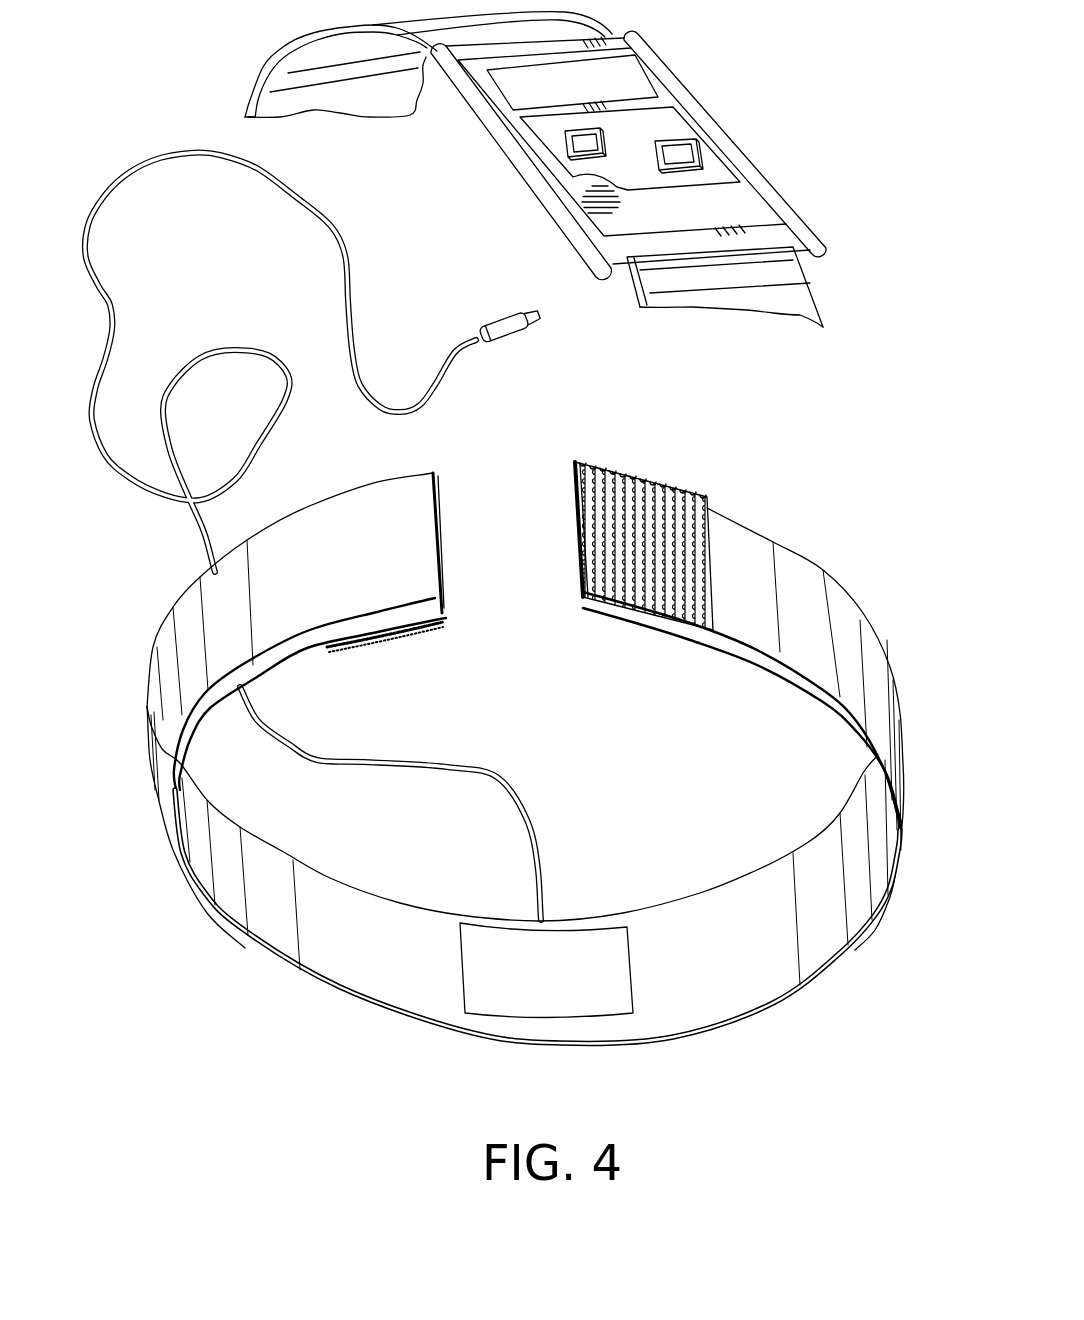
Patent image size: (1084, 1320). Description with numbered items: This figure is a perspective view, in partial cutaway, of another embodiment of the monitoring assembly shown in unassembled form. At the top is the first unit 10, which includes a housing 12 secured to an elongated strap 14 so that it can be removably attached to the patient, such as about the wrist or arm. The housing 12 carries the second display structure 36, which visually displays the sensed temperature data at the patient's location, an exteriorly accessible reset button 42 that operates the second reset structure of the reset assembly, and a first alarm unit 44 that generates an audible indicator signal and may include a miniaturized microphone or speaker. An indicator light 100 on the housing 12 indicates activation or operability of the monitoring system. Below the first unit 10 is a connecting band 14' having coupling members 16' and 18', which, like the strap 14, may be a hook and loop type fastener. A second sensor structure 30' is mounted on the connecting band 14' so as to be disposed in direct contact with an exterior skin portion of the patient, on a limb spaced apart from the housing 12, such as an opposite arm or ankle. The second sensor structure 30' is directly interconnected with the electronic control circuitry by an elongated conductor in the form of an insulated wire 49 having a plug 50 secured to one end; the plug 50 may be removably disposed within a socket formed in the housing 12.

The first unit 10 is at (775, 117).
The housing 12 is at (473, 117).
The elongated strap 14 is at (566, 173).
The second display structure 36 is at (627, 77).
The reset button 42 is at (568, 138).
The first alarm unit 44 is at (597, 207).
The indicator light 100 is at (698, 152).
The insulated wire 49 is at (107, 198).
The plug 50 is at (507, 323).
The connecting band 14' is at (533, 758).
The connector member 16' is at (692, 518).
The connector member 18' is at (438, 663).
The second sensor structure 30' is at (598, 998).